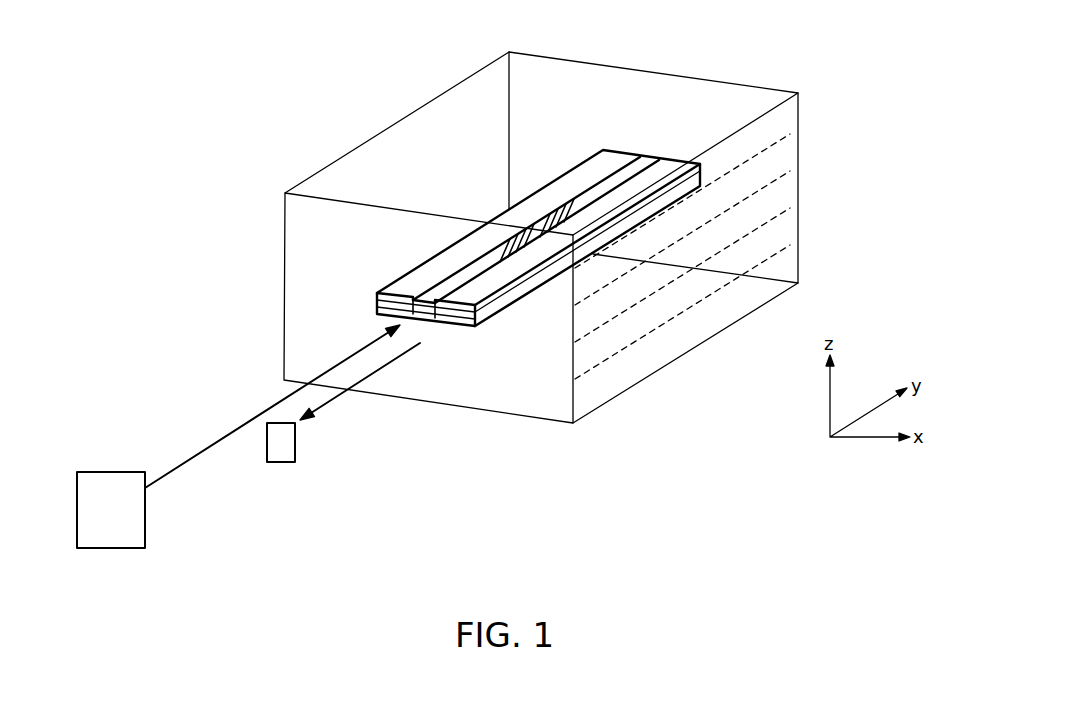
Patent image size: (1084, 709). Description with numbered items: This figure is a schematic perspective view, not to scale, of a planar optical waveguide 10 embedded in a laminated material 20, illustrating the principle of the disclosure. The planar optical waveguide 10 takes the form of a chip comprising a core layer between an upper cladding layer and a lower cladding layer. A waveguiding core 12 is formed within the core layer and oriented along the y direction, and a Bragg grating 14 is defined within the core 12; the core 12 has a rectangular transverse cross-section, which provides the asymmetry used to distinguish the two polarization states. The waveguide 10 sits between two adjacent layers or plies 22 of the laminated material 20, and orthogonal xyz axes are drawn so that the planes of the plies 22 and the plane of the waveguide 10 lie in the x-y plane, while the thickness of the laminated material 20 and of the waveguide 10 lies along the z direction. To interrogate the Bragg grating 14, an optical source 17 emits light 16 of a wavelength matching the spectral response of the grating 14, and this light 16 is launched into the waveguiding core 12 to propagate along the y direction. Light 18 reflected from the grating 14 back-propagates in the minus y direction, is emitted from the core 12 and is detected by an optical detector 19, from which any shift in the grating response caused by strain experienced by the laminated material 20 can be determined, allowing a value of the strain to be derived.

The planar optical waveguide 10 is at (516, 248).
The waveguiding core 12 is at (603, 183).
The Bragg grating 14 is at (518, 247).
The light 16 is at (203, 453).
The optical source 17 is at (112, 548).
The reflected light 18 is at (340, 393).
The optical detector 19 is at (280, 450).
The laminated material 20 is at (653, 90).
The plies 22 is at (782, 162).